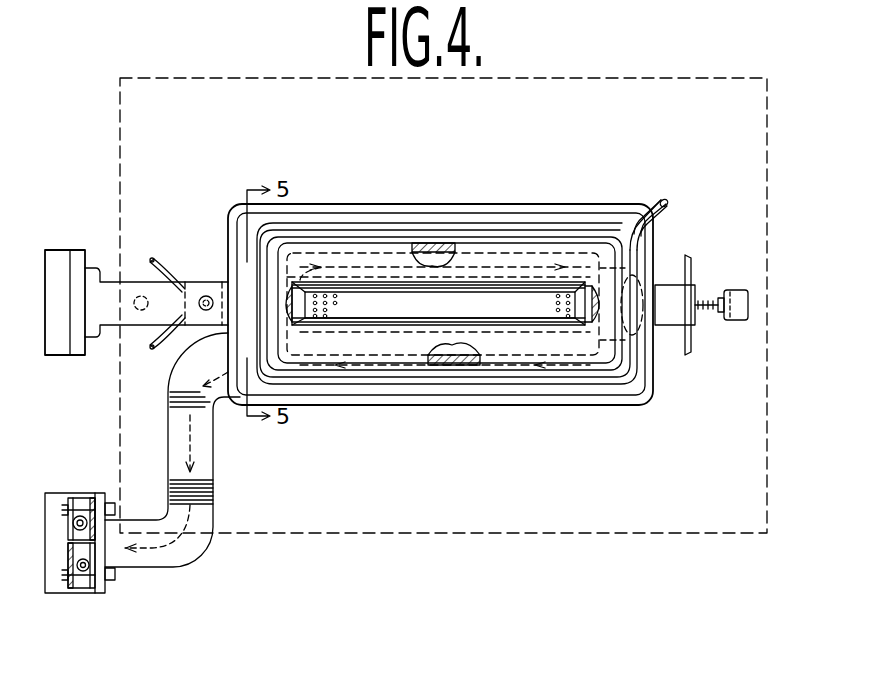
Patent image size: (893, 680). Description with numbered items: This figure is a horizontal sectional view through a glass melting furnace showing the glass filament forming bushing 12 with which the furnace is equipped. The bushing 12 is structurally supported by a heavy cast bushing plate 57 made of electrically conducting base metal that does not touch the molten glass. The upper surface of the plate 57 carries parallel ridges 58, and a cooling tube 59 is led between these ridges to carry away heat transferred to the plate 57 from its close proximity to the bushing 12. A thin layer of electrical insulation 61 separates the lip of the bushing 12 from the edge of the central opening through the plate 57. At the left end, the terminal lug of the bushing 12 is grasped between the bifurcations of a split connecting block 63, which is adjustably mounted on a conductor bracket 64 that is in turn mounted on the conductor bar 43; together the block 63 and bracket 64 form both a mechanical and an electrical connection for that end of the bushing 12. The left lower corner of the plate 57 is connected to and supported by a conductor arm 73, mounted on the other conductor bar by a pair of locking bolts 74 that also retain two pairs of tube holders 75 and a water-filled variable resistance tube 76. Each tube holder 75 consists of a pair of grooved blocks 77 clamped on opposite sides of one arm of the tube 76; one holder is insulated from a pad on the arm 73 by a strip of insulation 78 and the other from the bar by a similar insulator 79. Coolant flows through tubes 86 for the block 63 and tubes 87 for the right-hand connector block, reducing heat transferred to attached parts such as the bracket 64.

The bushing 12 is at (486, 252).
The conductor bar 43 is at (44, 250).
The bushing plate 57 is at (588, 406).
The ridges 58 is at (568, 226).
The cooling tube 59 is at (668, 204).
The electrical insulation 61 is at (440, 244).
The split connecting block 63 is at (222, 282).
The conductor bracket 64 is at (130, 278).
The conductor arm 73 is at (214, 486).
The locking bolts 74 is at (115, 509).
The tube holders 75 is at (92, 500).
The variable resistance tube 76 is at (73, 523).
The grooved blocks 77 is at (75, 500).
The strip of insulation 78 is at (108, 495).
The insulator 79 is at (66, 558).
The tubes 86 is at (158, 262).
The tubes 87 is at (690, 346).